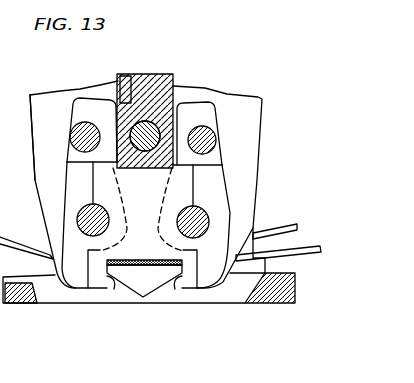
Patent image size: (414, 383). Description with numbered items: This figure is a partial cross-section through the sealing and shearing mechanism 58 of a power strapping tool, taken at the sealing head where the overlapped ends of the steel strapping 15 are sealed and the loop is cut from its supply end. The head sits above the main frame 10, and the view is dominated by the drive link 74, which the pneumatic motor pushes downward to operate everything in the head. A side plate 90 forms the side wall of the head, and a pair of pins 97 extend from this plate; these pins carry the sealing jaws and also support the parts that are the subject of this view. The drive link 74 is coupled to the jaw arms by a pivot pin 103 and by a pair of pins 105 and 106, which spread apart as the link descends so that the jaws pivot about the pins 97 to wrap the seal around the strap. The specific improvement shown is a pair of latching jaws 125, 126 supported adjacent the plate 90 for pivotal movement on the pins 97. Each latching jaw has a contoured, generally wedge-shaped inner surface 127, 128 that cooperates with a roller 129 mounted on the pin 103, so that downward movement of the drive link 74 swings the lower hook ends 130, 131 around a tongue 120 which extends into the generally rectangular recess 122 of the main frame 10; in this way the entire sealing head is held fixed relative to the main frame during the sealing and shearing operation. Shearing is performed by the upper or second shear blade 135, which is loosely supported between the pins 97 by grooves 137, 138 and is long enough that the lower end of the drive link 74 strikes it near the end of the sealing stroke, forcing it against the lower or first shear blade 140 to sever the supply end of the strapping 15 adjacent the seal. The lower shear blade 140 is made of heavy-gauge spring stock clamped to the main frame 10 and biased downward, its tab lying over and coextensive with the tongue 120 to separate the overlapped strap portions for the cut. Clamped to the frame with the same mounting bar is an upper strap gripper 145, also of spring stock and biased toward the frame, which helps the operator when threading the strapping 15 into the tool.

The main frame 10 is at (264, 304).
The steel strapping 15 is at (148, 258).
The sealing and shearing mechanism 58 is at (258, 153).
The drive link 74 is at (174, 78).
The side plate 90 is at (33, 135).
The pins 97 is at (90, 208).
The pivot pin 103 is at (141, 127).
The pin 105 is at (81, 139).
The pin 106 is at (209, 140).
The tongue 120 is at (156, 289).
The recess 122 is at (46, 297).
The latching jaw 125 is at (68, 180).
The latching jaw 126 is at (218, 182).
The wedge-shaped inner surface 127 is at (114, 163).
The wedge-shaped inner surface 128 is at (197, 168).
The roller 129 is at (114, 93).
The lower hook end 130 is at (106, 292).
The lower hook end 131 is at (178, 292).
The upper shear blade 135 is at (152, 200).
The groove 137 is at (195, 251).
The groove 138 is at (90, 247).
The lower shear blade 140 is at (306, 255).
The upper strap gripper 145 is at (300, 233).